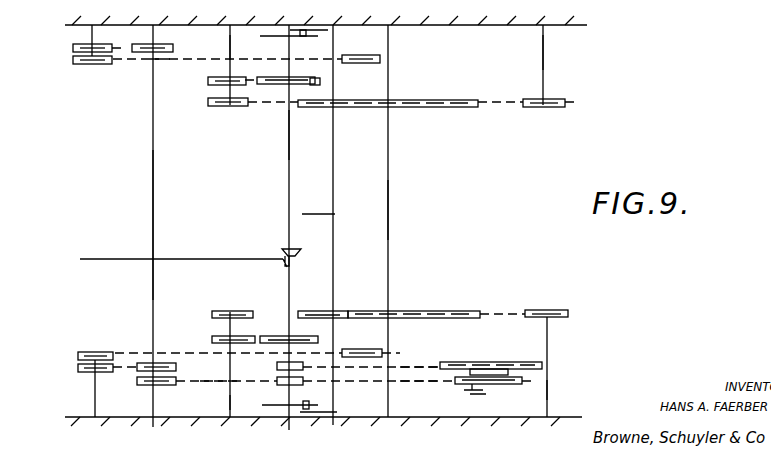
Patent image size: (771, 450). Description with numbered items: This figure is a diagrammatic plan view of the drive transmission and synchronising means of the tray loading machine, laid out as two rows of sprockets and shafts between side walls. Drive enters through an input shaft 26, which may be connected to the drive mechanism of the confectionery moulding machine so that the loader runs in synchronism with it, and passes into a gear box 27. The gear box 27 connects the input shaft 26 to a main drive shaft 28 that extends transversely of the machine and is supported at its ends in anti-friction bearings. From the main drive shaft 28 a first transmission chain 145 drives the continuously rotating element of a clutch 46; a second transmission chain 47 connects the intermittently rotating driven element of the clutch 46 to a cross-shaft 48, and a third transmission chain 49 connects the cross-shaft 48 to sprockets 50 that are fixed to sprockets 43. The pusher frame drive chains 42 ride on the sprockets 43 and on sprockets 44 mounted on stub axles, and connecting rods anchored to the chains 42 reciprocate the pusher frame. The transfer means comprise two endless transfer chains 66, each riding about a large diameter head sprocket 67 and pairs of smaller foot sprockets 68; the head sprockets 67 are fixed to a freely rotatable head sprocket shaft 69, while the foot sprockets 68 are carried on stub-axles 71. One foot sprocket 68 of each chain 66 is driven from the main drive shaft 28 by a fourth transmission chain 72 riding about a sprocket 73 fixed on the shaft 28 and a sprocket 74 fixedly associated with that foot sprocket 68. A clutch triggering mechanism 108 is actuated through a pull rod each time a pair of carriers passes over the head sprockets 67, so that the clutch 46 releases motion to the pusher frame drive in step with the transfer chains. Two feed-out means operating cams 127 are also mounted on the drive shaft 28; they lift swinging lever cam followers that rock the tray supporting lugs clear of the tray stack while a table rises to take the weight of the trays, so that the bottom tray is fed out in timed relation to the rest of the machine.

The input shaft 26 is at (107, 259).
The gear box 27 is at (283, 251).
The main drive shaft 28 is at (289, 133).
The pusher frame drive chains 42 is at (160, 63).
The sprockets 43 is at (73, 62).
The sprockets 44 is at (362, 57).
The clutch 46 is at (513, 355).
The second transmission chain 47 is at (215, 386).
The cross-shaft 48 is at (153, 240).
The third transmission chain 49 is at (127, 60).
The sprockets 50 is at (73, 48).
The endless transfer chains 66 is at (497, 108).
The head sprocket 67 is at (438, 108).
The foot sprockets 68 is at (221, 108).
The head sprocket shaft 69 is at (388, 210).
The stub-axles 71 is at (230, 43).
The fourth transmission chains 72 is at (262, 66).
The sprockets 73 is at (320, 83).
The sprockets 74 is at (208, 82).
The clutch triggering mechanism 108 is at (487, 392).
The feed-out means operating cams 127 is at (278, 38).
The first transmission chain 145 is at (413, 366).